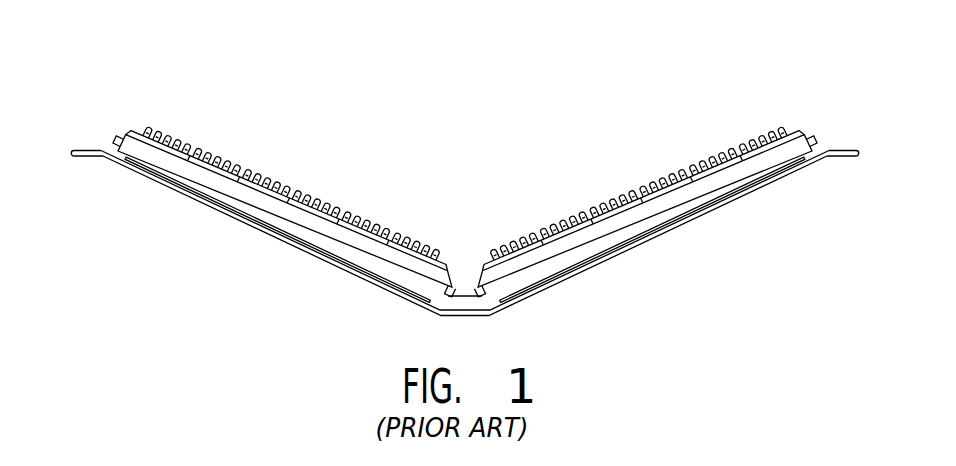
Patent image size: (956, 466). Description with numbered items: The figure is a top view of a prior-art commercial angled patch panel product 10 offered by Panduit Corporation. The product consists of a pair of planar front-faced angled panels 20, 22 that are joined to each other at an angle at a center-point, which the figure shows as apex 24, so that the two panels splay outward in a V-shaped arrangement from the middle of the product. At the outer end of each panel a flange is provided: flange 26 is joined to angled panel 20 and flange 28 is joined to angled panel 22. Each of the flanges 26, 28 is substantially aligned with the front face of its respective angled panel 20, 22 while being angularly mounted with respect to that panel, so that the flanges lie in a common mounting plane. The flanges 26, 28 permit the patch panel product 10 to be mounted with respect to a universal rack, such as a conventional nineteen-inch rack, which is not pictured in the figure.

The angled patch panel product 10 is at (567, 70).
The angled panel 20 is at (632, 235).
The angled panel 22 is at (223, 200).
The apex 24 is at (464, 300).
The flange 26 is at (832, 150).
The flange 28 is at (88, 150).